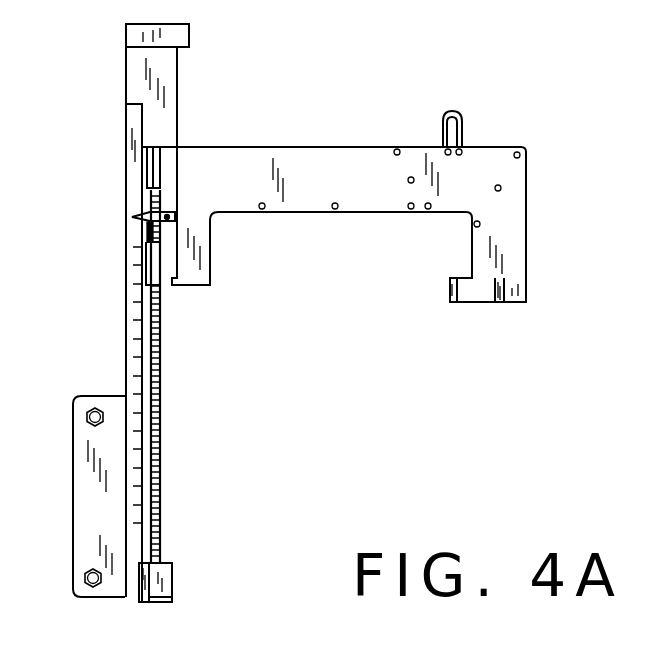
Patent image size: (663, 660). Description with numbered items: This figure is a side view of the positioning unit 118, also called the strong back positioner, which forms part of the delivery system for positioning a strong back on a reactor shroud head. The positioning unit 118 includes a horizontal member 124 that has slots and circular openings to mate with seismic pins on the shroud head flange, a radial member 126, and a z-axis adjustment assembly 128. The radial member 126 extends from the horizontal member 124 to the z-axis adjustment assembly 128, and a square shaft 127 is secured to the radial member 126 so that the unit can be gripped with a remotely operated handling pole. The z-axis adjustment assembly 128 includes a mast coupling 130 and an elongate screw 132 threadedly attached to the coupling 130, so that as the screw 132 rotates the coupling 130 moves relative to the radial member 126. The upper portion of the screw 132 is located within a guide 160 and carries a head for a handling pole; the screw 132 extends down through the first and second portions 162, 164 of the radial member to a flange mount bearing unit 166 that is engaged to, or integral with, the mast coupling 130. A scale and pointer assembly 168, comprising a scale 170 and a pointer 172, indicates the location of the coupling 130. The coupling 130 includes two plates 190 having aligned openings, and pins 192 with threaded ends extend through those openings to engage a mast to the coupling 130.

The positioning unit 118 is at (322, 148).
The horizontal member 124 is at (470, 296).
The radial member 126 is at (316, 184).
The square shaft 127 is at (460, 116).
The z-axis adjustment assembly 128 is at (128, 160).
The mast coupling 130 is at (94, 524).
The elongate screw 132 is at (161, 469).
The guide 160 is at (184, 36).
The first portion 162 is at (154, 166).
The second portion 164 is at (152, 262).
The flange mount bearing unit 166 is at (165, 588).
The scale and pointer assembly 168 is at (121, 237).
The scale 170 is at (126, 292).
The pointer 172 is at (136, 226).
The plates 190 is at (82, 491).
The pins 192 is at (88, 415).